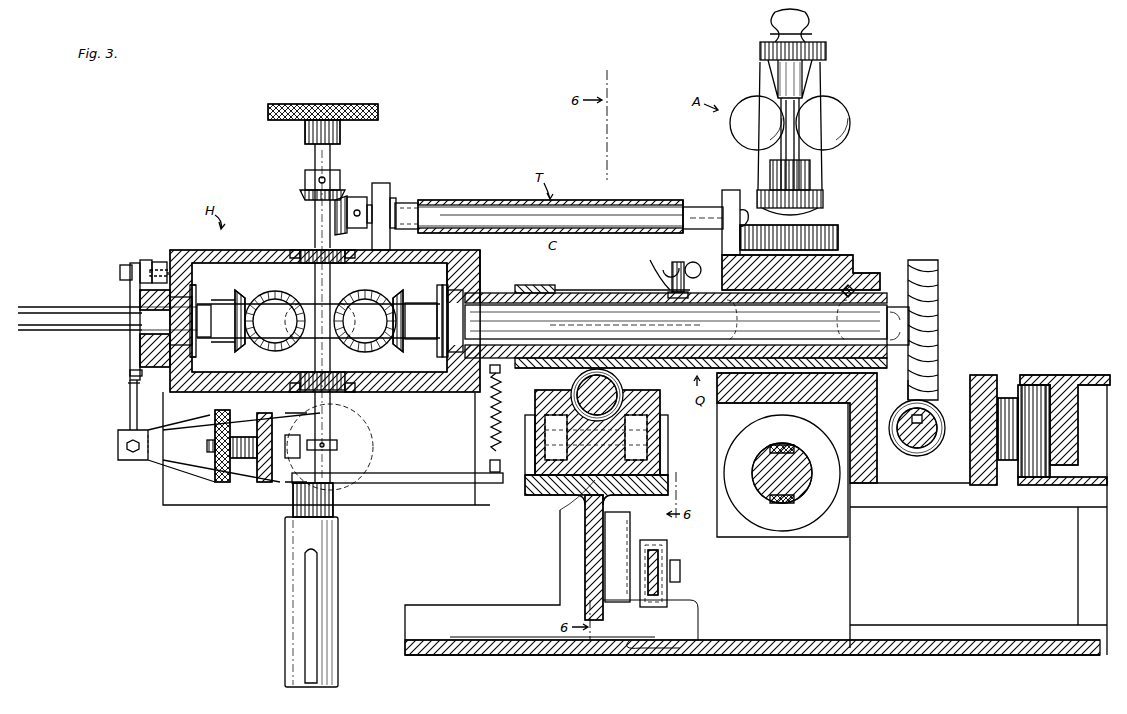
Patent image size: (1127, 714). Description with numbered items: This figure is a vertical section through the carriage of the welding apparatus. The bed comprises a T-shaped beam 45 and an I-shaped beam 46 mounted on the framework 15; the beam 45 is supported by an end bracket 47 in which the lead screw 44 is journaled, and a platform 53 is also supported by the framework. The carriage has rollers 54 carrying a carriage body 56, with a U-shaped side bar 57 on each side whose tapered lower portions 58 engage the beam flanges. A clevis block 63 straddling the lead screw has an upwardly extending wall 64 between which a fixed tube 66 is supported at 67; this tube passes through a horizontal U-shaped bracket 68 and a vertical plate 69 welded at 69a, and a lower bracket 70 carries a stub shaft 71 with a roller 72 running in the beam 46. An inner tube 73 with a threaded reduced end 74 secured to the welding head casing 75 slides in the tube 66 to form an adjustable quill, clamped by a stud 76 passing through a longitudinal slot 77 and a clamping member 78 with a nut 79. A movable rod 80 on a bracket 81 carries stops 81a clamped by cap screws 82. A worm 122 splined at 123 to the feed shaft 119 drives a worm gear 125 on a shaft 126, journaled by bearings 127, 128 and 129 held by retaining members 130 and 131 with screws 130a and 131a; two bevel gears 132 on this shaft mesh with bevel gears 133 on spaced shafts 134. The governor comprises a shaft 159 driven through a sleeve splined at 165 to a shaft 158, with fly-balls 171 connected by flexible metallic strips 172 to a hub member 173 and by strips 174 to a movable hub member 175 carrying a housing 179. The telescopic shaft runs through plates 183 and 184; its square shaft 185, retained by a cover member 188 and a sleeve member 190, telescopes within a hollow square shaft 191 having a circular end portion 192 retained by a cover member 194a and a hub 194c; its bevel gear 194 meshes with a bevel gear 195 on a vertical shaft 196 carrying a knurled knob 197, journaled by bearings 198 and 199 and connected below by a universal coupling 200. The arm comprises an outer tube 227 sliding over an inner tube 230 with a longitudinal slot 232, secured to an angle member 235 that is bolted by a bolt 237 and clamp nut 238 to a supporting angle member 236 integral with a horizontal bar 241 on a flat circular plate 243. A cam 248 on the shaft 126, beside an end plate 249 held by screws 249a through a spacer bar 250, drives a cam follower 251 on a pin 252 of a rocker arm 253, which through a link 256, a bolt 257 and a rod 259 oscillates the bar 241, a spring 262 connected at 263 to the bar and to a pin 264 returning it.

The framework 15 is at (993, 657).
The lead screw 44 is at (620, 385).
The T-shaped beam 45 is at (585, 559).
The I-shaped beam 46 is at (1084, 374).
The end bracket 47 is at (448, 598).
The platform 53 is at (1078, 577).
The rollers 54 is at (536, 408).
The carriage body 56 is at (560, 508).
The U-shaped side bar 57 is at (526, 438).
The tapered lower portions 58 is at (538, 495).
The clevis block 63 is at (534, 392).
The upwardly extending wall 64 is at (660, 333).
The fixed outer tube 66 is at (668, 370).
The tube support point 67 is at (540, 284).
The horizontal U-shaped bracket 68 is at (852, 255).
The vertical plate 69 is at (868, 466).
The weld 69a is at (853, 285).
The horizontal U-shaped bracket 70 is at (982, 374).
The stub shaft 71 is at (1006, 397).
The roller 72 is at (1032, 395).
The inner tube 73 is at (499, 292).
The threaded reduced end 74 is at (482, 268).
The welding head casing 75 is at (270, 253).
The stud 76 is at (668, 286).
The longitudinal slot 77 is at (598, 290).
The clamping member 78 is at (698, 262).
The nut 79 is at (674, 264).
The movable rod 80 is at (660, 560).
The bracket 81 is at (620, 540).
The stops 81a is at (653, 512).
The cap screws 82 is at (680, 580).
The feed shaft 119 is at (928, 450).
The worm 122 is at (916, 448).
The spline 123 is at (930, 403).
The worm gear 125 is at (940, 290).
The shaft 126 is at (48, 306).
The bearing 127 is at (890, 305).
The bearing 128 is at (466, 262).
The bearing 129 is at (199, 273).
The retaining member 130 is at (440, 291).
The screws 130a is at (443, 293).
The retaining member 131 is at (196, 340).
The screws 131a is at (197, 288).
The bevel gears 132 is at (241, 290).
The bevel gear 133 is at (278, 291).
The spaced shafts 134 is at (300, 302).
The shaft 158 is at (802, 486).
The governor shaft 159 is at (805, 156).
The spline 165 is at (780, 444).
The fly-balls 171 is at (852, 116).
The flexible metallic strips 172 is at (825, 78).
The hub member 173 is at (827, 51).
The flexible metallic strips 174 is at (823, 178).
The rotatable hub member 175 is at (825, 198).
The housing 179 is at (840, 225).
The vertical plate 183 is at (385, 180).
The vertical plate 184 is at (733, 188).
The square shaped shaft 185 is at (697, 206).
The cover member 188 is at (726, 193).
The sleeve member 190 is at (748, 222).
The hollow square shaped shaft 191 is at (448, 200).
The solid circular end portion 192 is at (393, 228).
The bevel gear 194 is at (345, 196).
The cover member 194a is at (398, 198).
The hub 194c is at (370, 195).
The bevel gear 195 is at (304, 179).
The vertical shaft 196 is at (312, 150).
The knurled knob 197 is at (380, 113).
The bearing 198 is at (300, 252).
The bearing 199 is at (334, 378).
The universal coupling 200 is at (340, 447).
The outer tube 227 is at (286, 619).
The inner tube 230 is at (287, 516).
The longitudinal slot 232 is at (318, 615).
The angle member 235 is at (385, 477).
The supporting angle member 236 is at (265, 413).
The bolt 237 is at (290, 490).
The clamp nut 238 is at (222, 482).
The horizontal bar 241 is at (150, 462).
The flat circular plate 243 is at (370, 490).
The cam 248 is at (140, 338).
The end plate 249 is at (140, 352).
The screws 249a is at (130, 374).
The spacer bar 250 is at (155, 392).
The cam follower 251 is at (144, 260).
The pin 252 is at (160, 262).
The rocker arm 253 is at (152, 268).
The link 256 is at (129, 295).
The bolt 257 is at (121, 269).
The rod 259 is at (128, 402).
The spring 262 is at (488, 424).
The spring connection 263 is at (490, 465).
The pin 264 is at (500, 370).